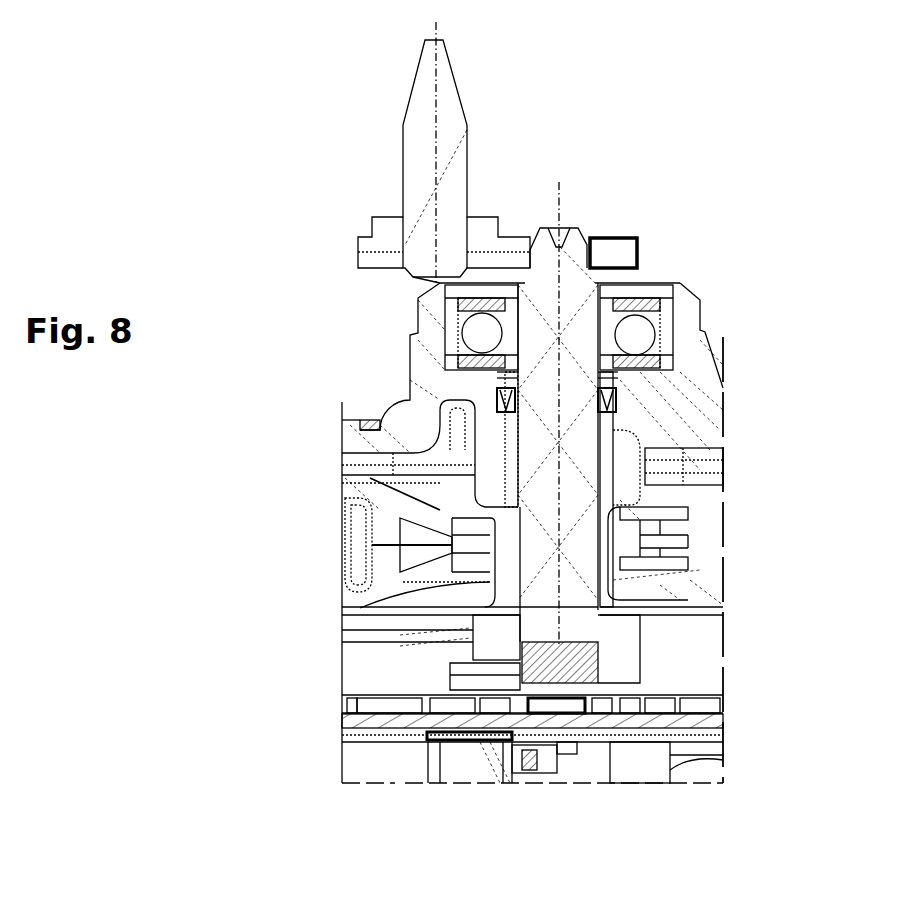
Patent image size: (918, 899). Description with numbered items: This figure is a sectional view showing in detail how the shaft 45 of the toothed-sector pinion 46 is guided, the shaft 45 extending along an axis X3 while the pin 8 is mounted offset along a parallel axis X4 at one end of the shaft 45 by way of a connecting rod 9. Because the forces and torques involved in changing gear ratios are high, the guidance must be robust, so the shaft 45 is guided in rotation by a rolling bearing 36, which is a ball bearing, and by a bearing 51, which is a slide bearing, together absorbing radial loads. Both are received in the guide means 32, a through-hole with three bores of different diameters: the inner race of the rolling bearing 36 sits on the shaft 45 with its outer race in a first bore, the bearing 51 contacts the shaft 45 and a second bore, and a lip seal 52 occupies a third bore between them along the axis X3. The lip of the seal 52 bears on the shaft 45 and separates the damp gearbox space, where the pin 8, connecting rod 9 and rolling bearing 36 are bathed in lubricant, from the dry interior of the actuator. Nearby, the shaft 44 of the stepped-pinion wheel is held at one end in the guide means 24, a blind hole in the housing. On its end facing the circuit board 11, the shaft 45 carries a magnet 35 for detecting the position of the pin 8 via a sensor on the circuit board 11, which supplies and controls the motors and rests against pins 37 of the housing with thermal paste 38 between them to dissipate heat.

The axis X4 is at (432, 26).
The axis X3 is at (558, 203).
The pin 8 is at (446, 122).
The connecting rod 9 is at (508, 253).
The rolling bearing 36 is at (637, 336).
The lip seal 52 is at (497, 404).
The guide means 32 is at (690, 392).
The shaft 45 is at (582, 450).
The bearing 51 is at (607, 487).
The toothed-sector pinion 46 is at (638, 545).
The shaft 44 is at (483, 645).
The guide means 24 is at (462, 682).
The magnet 35 is at (577, 660).
The circuit board 11 is at (357, 725).
The thermal paste 38 is at (440, 742).
The pins 37 is at (473, 763).